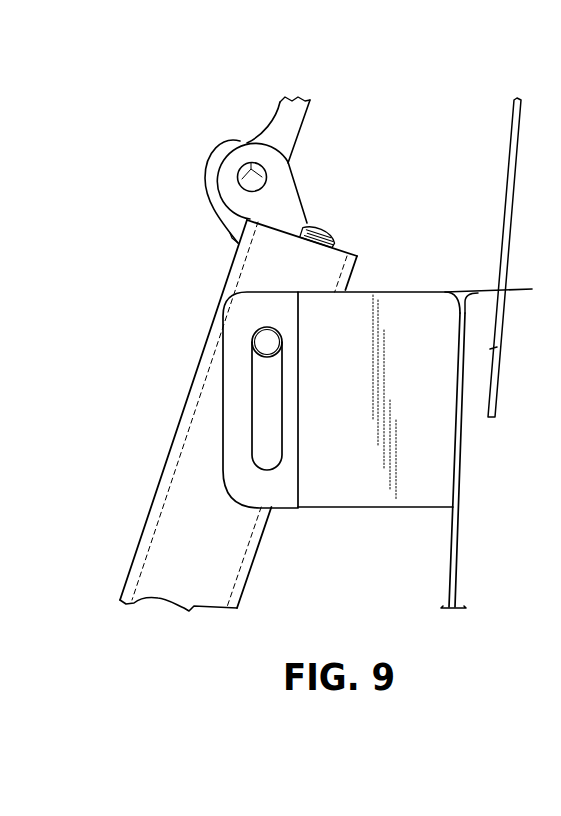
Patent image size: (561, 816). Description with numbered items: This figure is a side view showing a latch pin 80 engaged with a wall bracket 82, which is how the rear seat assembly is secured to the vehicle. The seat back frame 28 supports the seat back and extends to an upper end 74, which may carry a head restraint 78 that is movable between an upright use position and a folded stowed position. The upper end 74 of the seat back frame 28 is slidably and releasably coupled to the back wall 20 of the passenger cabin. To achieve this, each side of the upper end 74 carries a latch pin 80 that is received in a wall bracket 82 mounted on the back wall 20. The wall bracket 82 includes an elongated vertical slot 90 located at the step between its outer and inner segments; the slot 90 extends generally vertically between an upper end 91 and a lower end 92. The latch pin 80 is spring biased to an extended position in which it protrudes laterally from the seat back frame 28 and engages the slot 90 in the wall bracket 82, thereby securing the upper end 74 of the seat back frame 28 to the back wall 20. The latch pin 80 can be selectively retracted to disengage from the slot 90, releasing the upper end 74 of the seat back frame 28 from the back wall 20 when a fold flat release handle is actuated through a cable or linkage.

The back wall 20 is at (452, 553).
The seat back frame 28 is at (160, 565).
The upper end 74 is at (290, 252).
The head restraint 78 is at (287, 120).
The latch pin 80 is at (253, 343).
The wall bracket 82 is at (402, 303).
The elongated vertical slot 90 is at (251, 404).
The upper end 91 is at (267, 328).
The lower end 92 is at (267, 472).